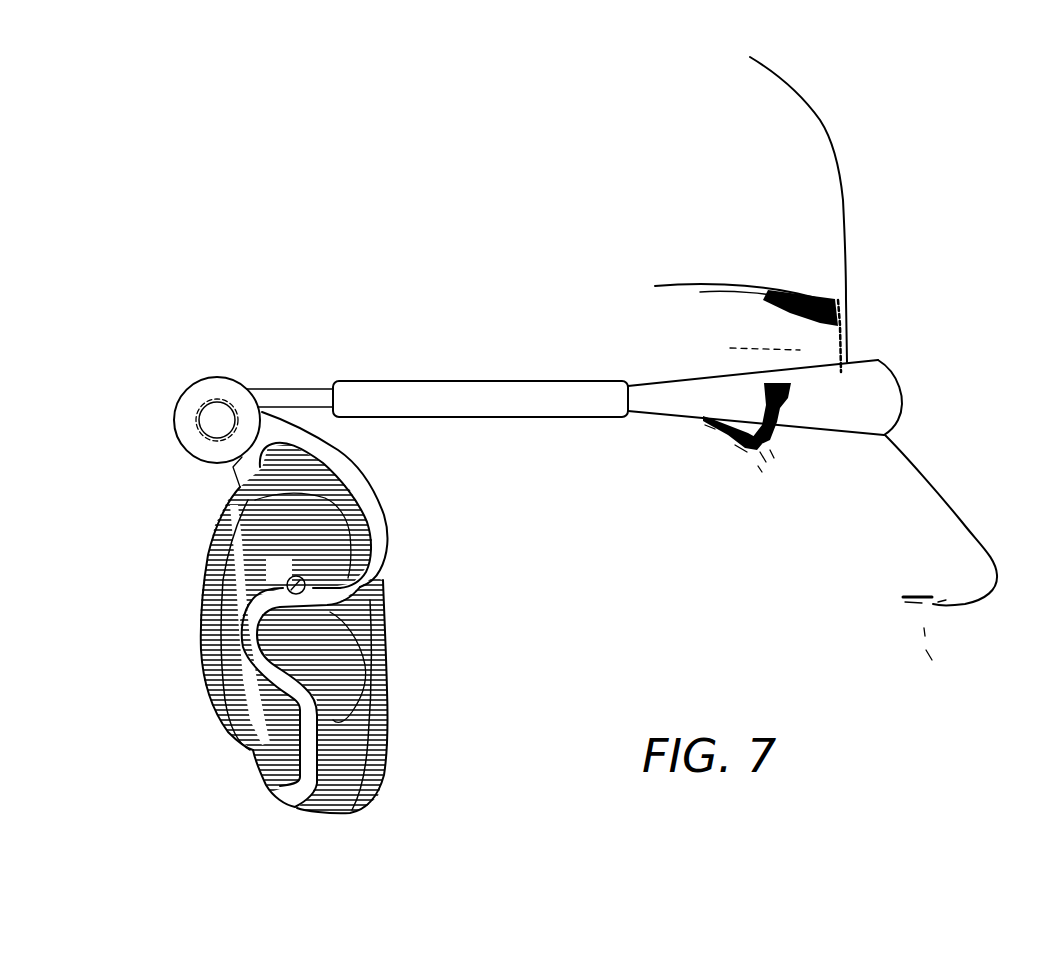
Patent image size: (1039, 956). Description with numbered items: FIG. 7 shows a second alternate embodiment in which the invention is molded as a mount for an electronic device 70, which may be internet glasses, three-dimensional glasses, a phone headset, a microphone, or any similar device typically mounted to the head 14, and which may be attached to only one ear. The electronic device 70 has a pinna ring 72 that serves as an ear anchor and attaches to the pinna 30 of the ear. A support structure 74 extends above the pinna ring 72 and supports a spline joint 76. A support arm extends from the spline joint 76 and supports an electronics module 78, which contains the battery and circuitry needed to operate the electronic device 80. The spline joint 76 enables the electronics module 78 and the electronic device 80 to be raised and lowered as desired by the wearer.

The head 14 is at (772, 141).
The pinna 30 is at (262, 715).
The electronic device 70 is at (390, 337).
The pinna ring 72 is at (380, 543).
The support structure 74 is at (357, 467).
The spline joint 76 is at (220, 428).
The electronics module 78 is at (535, 390).
The electronic device 80 is at (730, 373).